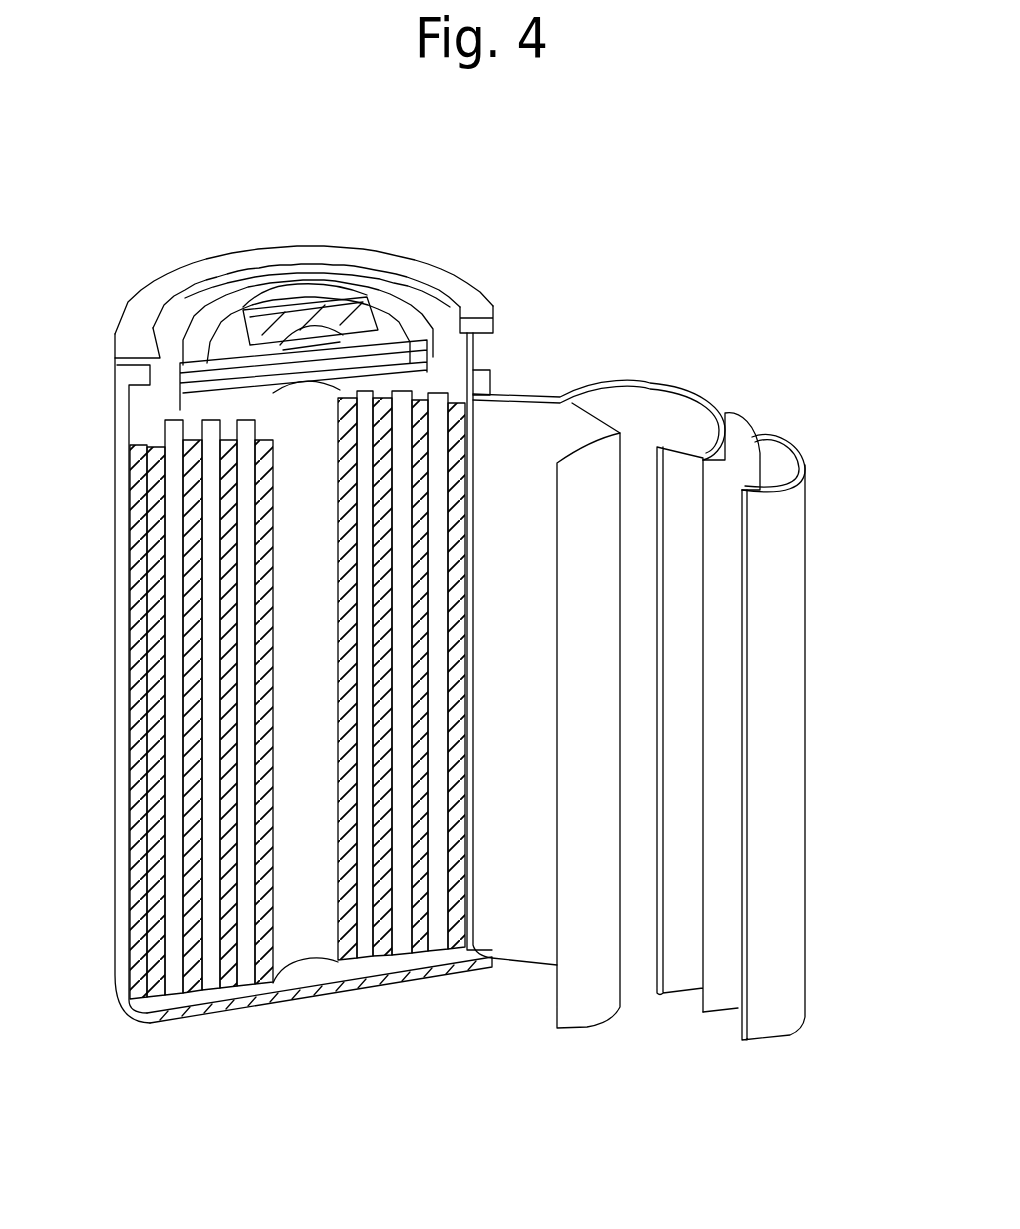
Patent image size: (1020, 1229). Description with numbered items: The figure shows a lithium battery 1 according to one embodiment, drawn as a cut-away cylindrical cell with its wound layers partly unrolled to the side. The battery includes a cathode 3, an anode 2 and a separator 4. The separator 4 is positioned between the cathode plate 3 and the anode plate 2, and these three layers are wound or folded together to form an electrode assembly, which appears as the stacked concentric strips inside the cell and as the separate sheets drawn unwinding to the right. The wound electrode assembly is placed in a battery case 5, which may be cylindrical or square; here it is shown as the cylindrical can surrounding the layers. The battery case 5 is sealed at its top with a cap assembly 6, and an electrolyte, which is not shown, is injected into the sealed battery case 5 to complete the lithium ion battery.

The lithium battery 1 is at (772, 355).
The anode 2 is at (792, 577).
The cathode 3 is at (678, 458).
The separator 4 is at (790, 448).
The battery case 5 is at (117, 932).
The cap assembly 6 is at (322, 290).